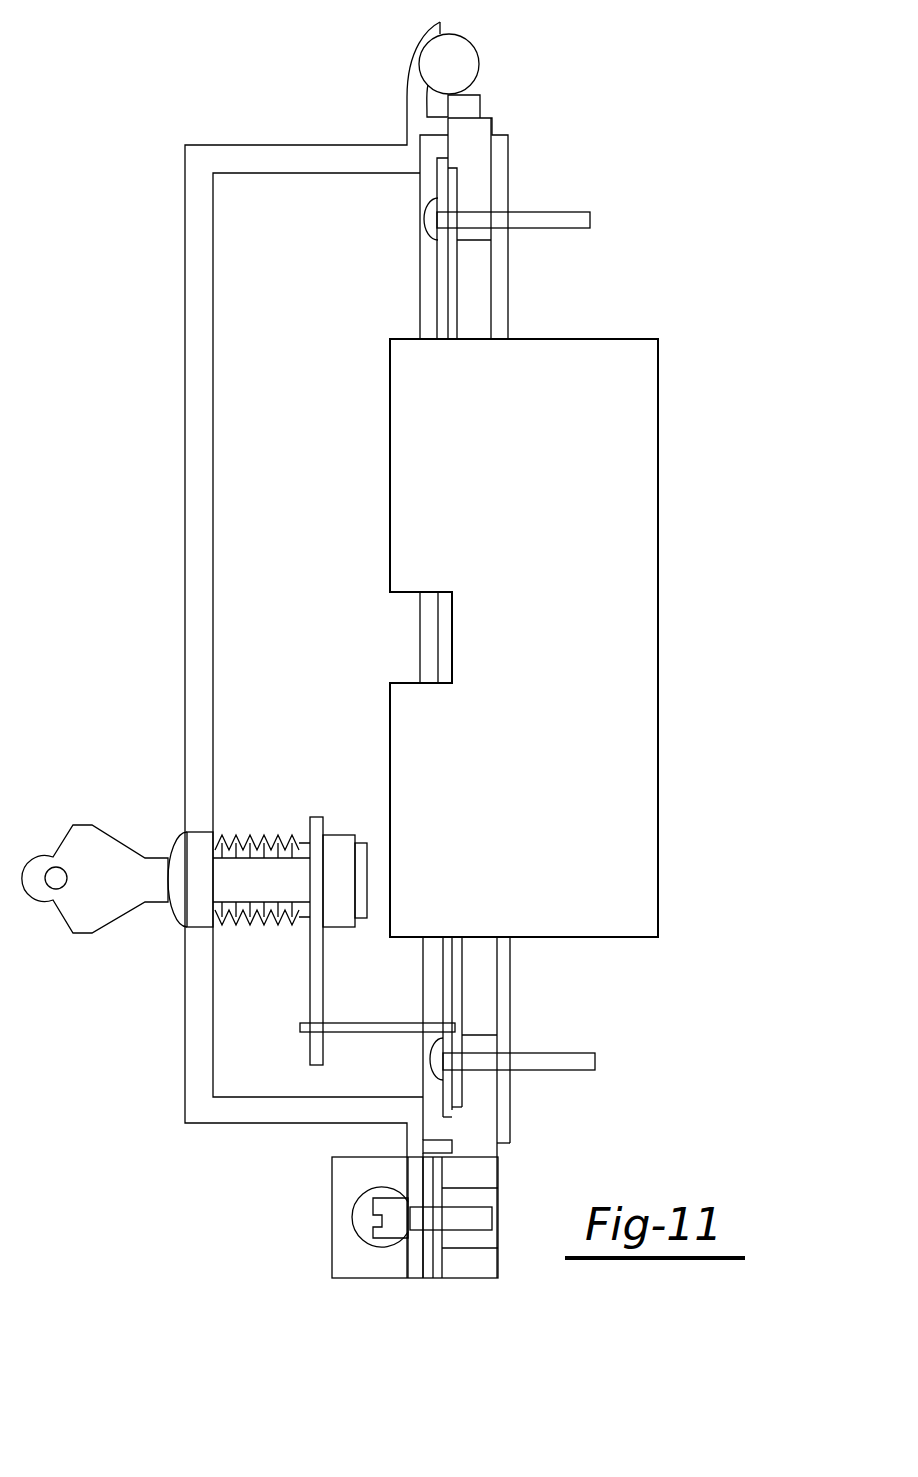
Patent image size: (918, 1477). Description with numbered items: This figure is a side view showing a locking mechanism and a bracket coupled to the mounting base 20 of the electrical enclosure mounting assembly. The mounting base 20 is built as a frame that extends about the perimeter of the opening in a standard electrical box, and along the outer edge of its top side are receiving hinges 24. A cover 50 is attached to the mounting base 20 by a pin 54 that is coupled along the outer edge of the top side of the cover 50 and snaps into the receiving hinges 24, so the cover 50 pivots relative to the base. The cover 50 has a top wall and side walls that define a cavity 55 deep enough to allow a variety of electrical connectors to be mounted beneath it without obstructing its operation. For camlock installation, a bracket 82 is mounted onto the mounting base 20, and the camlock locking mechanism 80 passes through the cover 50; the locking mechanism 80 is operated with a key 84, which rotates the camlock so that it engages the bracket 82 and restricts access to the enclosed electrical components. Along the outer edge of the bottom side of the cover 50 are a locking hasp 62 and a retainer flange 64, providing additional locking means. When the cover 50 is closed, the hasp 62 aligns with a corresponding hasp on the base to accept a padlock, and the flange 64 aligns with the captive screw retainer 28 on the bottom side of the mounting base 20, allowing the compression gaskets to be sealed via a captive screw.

The mounting base 20 is at (510, 312).
The receiving hinges 24 is at (403, 67).
The pin 54 is at (481, 67).
The cover 50 is at (185, 310).
The cavity 55 is at (325, 305).
The camlock locking mechanism 80 is at (260, 833).
The key 84 is at (73, 825).
The bracket 82 is at (392, 1032).
The captive screw retainer 28 is at (432, 1280).
The locking hasp 62 is at (330, 1208).
The retainer flange 64 is at (417, 1278).